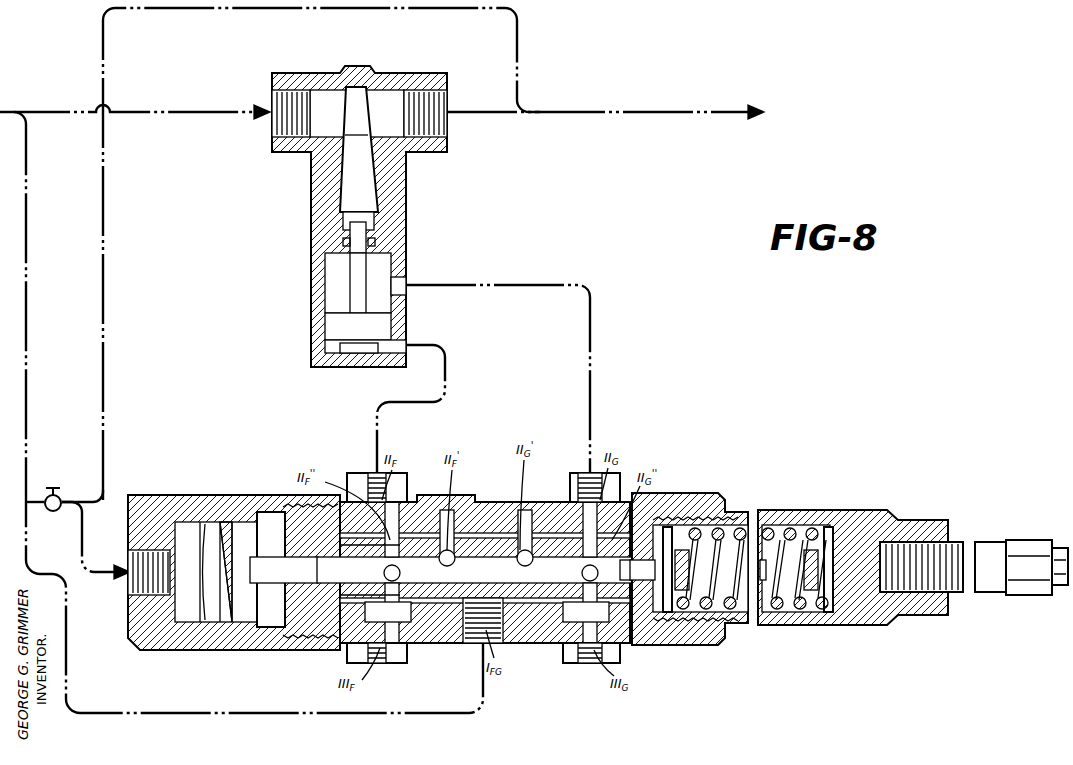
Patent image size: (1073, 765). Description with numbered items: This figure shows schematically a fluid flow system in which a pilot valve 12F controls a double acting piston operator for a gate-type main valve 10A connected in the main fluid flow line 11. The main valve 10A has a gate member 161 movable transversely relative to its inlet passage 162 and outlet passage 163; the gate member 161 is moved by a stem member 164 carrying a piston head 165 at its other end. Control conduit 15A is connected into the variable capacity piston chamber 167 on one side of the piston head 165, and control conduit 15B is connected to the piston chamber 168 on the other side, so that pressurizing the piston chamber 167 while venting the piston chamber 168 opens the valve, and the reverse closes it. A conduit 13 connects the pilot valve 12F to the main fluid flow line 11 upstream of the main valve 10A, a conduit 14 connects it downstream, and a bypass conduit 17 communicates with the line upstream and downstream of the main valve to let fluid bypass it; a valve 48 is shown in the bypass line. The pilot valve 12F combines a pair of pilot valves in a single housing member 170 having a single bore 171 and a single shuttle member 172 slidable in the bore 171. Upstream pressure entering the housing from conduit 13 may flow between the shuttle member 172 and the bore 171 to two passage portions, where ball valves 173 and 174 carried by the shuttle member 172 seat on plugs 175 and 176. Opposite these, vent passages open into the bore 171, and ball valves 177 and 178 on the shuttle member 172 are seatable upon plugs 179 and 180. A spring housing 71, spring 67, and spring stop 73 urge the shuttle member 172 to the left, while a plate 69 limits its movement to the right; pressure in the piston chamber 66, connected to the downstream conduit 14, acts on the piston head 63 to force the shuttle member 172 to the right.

The main valve 10A is at (432, 72).
The main fluid flow line 11 is at (70, 108).
The pilot valve 12F is at (770, 480).
The conduit 13 is at (27, 352).
The conduit 14 is at (104, 372).
The control conduit 15A is at (518, 284).
The control conduit 15B is at (446, 376).
The bypass conduit 17 is at (78, 500).
The gauge / valve 48 is at (50, 511).
The piston head 63 is at (222, 540).
The piston chamber 66 is at (190, 530).
The spring 67 is at (786, 610).
The plate 69 is at (660, 522).
The spring housing 71 is at (786, 511).
The spring stop 73 is at (672, 540).
The gate member 161 is at (348, 178).
The inlet passage 162 is at (314, 101).
The outlet passage 163 is at (402, 113).
The stem member 164 is at (352, 253).
The piston head 165 is at (328, 332).
The piston chamber 167 is at (328, 296).
The piston chamber 168 is at (328, 350).
The housing member 170 is at (448, 645).
The bore 171 is at (462, 602).
The shuttle member 172 is at (522, 585).
The ball valve 173 is at (440, 590).
The ball valve 174 is at (568, 583).
The plug 175 is at (470, 558).
The plug 176 is at (542, 558).
The ball valve 177 is at (382, 575).
The ball valve 178 is at (650, 643).
The plug 179 is at (385, 592).
The plug 180 is at (602, 585).